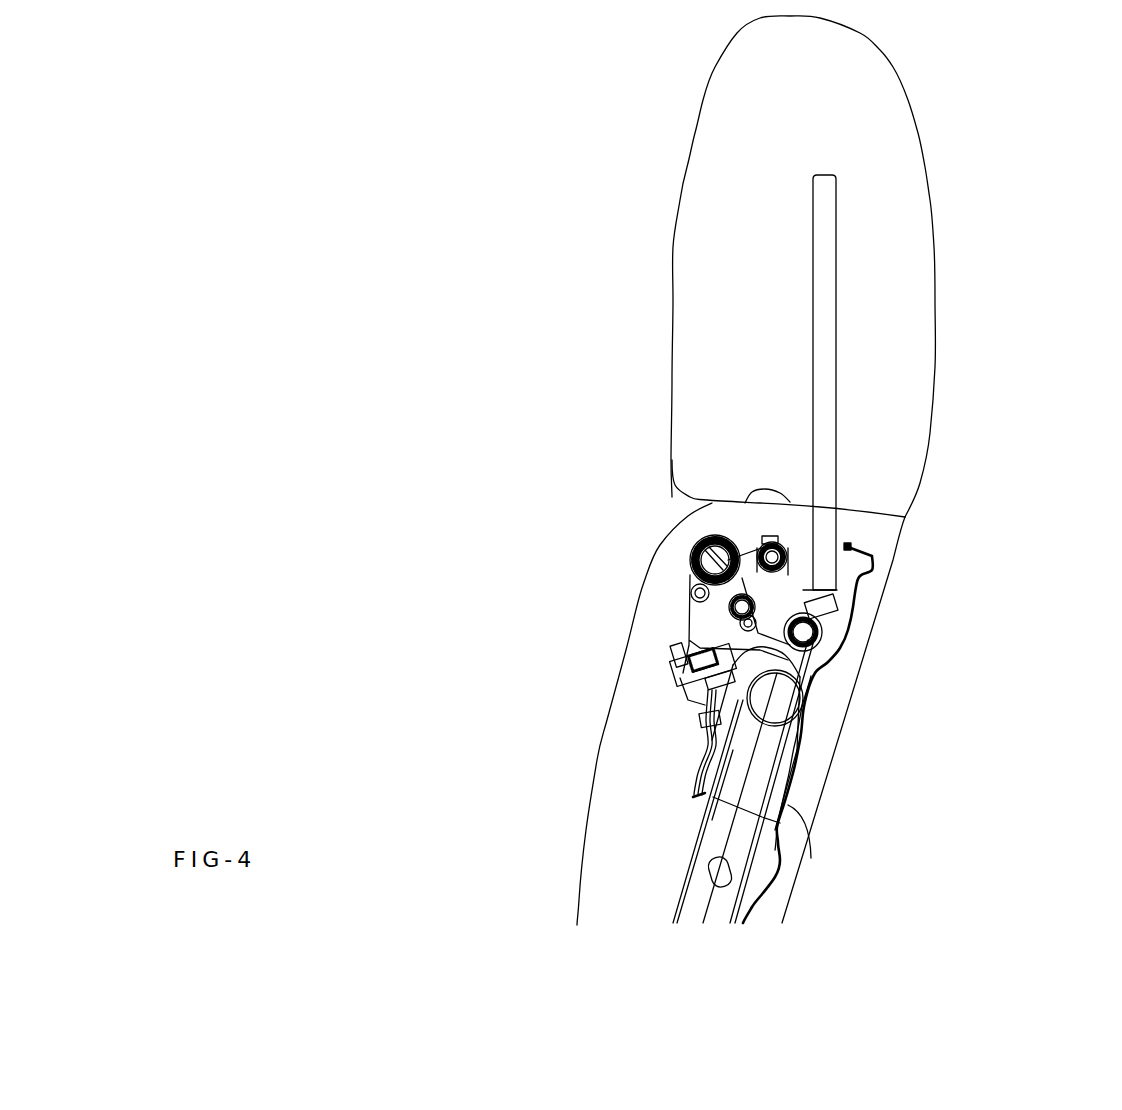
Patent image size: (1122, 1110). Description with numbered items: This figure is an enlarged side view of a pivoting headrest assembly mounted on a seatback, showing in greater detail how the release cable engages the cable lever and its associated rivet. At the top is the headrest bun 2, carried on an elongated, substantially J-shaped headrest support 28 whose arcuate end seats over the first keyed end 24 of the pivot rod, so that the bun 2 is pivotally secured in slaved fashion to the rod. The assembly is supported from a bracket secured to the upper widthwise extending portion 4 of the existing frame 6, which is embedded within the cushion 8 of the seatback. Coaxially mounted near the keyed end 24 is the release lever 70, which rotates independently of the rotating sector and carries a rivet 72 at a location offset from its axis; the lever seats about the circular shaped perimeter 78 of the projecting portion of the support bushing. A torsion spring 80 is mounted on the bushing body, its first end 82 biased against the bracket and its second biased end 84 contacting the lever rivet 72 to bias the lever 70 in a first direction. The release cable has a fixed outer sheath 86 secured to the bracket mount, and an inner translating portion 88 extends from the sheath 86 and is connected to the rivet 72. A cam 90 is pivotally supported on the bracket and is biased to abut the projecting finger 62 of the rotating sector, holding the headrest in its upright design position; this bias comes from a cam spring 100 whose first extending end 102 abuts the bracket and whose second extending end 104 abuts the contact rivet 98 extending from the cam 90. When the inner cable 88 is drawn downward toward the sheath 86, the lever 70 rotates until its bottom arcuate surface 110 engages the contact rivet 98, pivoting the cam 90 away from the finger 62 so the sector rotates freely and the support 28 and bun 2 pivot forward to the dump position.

The headrest bun 2 is at (673, 250).
The upper widthwise extending portion 4 is at (802, 863).
The frame 6 is at (802, 830).
The cushion 8 is at (590, 833).
The first keyed end 24 is at (700, 573).
The headrest support 28 is at (822, 330).
The projecting finger 62 is at (735, 622).
The lever 70 is at (713, 533).
The rivet 72 is at (787, 553).
The circular shaped perimeter 78 is at (714, 550).
The torsion spring 80 is at (714, 543).
The first end 82 is at (712, 590).
The second biased end 84 is at (775, 540).
The outer sheath 86 is at (697, 758).
The inner translating portion 88 is at (722, 666).
The cam 90 is at (803, 590).
The contact rivet 98 is at (802, 737).
The cam spring 100 is at (820, 653).
The first extending end 102 is at (905, 517).
The second extending end 104 is at (808, 692).
The bottom arcuate surface 110 is at (802, 753).